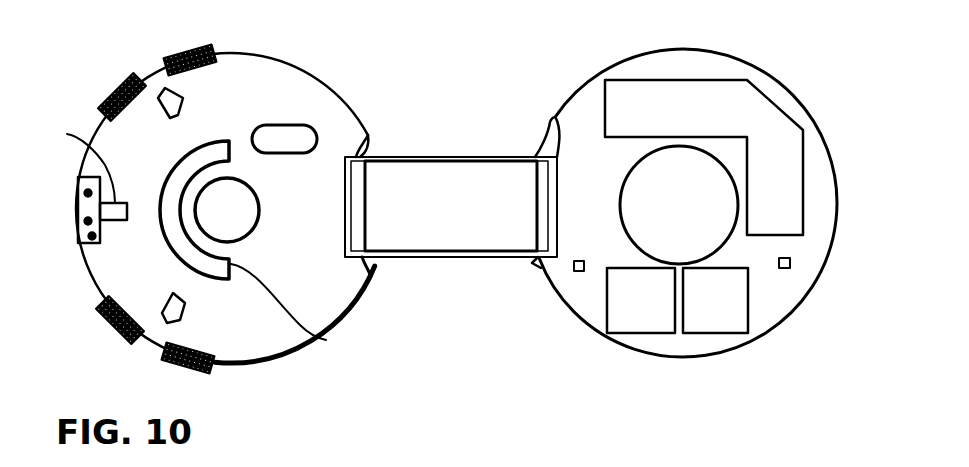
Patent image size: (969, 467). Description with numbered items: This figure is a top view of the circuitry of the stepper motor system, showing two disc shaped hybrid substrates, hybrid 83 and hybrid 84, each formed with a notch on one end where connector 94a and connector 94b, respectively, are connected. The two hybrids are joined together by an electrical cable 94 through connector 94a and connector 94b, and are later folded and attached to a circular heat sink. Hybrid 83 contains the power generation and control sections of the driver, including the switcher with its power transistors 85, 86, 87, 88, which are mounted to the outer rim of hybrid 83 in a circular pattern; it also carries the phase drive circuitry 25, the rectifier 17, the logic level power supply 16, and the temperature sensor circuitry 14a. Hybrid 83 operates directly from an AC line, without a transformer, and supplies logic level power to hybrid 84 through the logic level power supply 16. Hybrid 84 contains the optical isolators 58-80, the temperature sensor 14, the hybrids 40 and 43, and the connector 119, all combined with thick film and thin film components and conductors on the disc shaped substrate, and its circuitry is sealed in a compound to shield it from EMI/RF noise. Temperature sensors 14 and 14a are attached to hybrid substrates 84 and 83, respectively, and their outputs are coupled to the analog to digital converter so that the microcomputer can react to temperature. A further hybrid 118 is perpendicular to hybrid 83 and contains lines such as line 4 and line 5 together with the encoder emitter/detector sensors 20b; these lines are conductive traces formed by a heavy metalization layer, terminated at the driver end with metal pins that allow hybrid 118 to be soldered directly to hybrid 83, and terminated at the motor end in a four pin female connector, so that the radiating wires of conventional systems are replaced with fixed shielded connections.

The line 4 is at (88, 193).
The line 5 is at (88, 221).
The temperature sensor 14 is at (573, 267).
The temperature sensor 14a is at (183, 102).
The logic level power supply 16 is at (283, 125).
The rectifier 17 is at (259, 205).
The encoder emitter/detector sensors 20b is at (79, 169).
The phase drive circuitry 25 is at (295, 310).
The hybrid 40 is at (651, 307).
The hybrid 43 is at (724, 307).
The optical isolators 58-80 is at (750, 102).
The hybrid 83 is at (266, 350).
The hybrid 84 is at (770, 308).
The transistor 85 is at (186, 368).
The transistor 86 is at (112, 327).
The transistor 87 is at (118, 88).
The transistor 88 is at (182, 51).
The electrical cable 94 is at (462, 214).
The connector 94a is at (368, 138).
The connector 94b is at (553, 120).
The hybrid 118 is at (93, 245).
The connector 119 is at (698, 208).